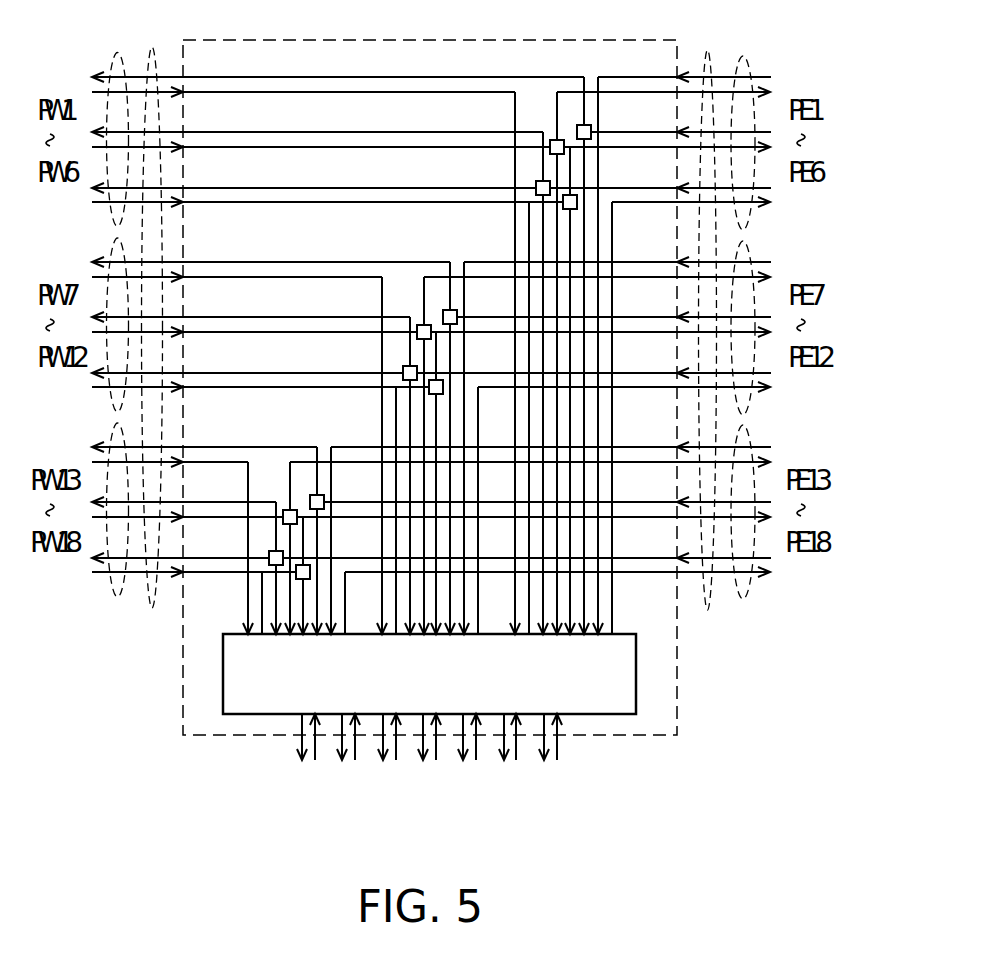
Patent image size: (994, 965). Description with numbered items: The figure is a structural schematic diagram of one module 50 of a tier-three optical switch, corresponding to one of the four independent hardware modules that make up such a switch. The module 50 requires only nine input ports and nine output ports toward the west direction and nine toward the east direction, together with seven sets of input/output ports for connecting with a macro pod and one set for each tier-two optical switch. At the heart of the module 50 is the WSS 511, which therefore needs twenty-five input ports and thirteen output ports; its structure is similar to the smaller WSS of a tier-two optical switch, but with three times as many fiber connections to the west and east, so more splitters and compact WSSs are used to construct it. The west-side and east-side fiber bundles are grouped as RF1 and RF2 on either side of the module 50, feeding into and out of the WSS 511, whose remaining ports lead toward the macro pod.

The module 50 is at (431, 404).
The 25×13 WSS 511 is at (636, 675).
The first group of optical fibers RF1 is at (150, 609).
The second group of optical fibers RF2 is at (708, 610).